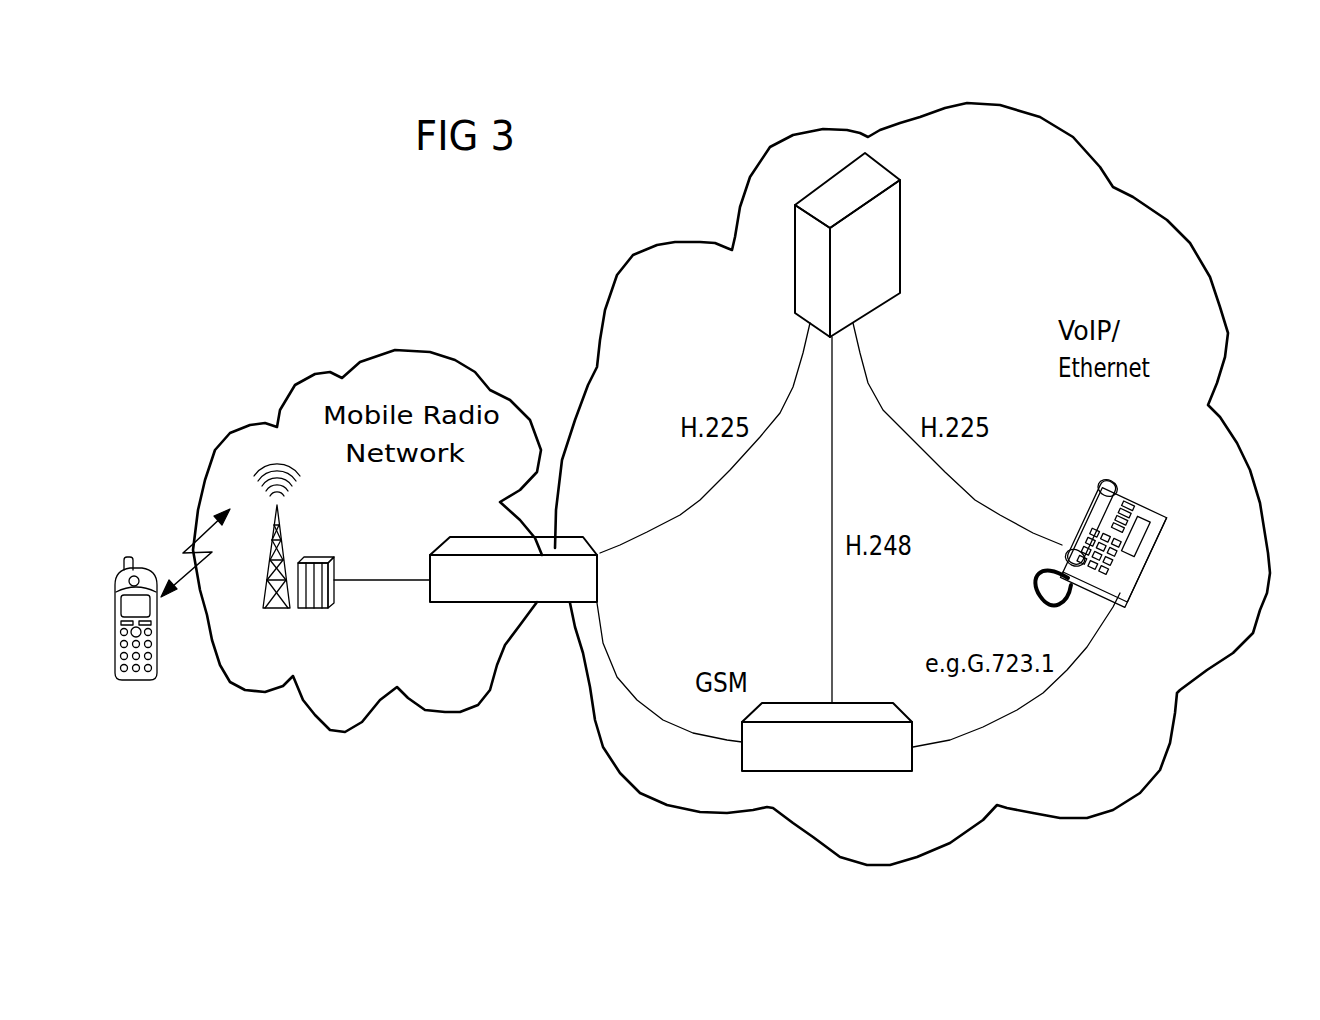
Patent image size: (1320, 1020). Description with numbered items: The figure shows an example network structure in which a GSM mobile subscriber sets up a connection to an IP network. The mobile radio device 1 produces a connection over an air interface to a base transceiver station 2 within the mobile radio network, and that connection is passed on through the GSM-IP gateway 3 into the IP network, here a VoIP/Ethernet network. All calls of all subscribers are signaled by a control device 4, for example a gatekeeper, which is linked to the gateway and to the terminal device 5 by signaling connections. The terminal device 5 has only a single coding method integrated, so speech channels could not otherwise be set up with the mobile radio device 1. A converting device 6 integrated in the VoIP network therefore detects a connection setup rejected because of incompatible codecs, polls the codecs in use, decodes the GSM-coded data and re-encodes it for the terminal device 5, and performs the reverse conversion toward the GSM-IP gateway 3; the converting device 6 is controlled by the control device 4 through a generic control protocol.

The mobile radio device 1 is at (137, 680).
The base transceiver station 2 is at (277, 608).
The GSM-IP gateway 3 is at (490, 740).
The control device 4 is at (888, 220).
The terminal device 5 is at (1120, 490).
The converting device 6 is at (795, 703).